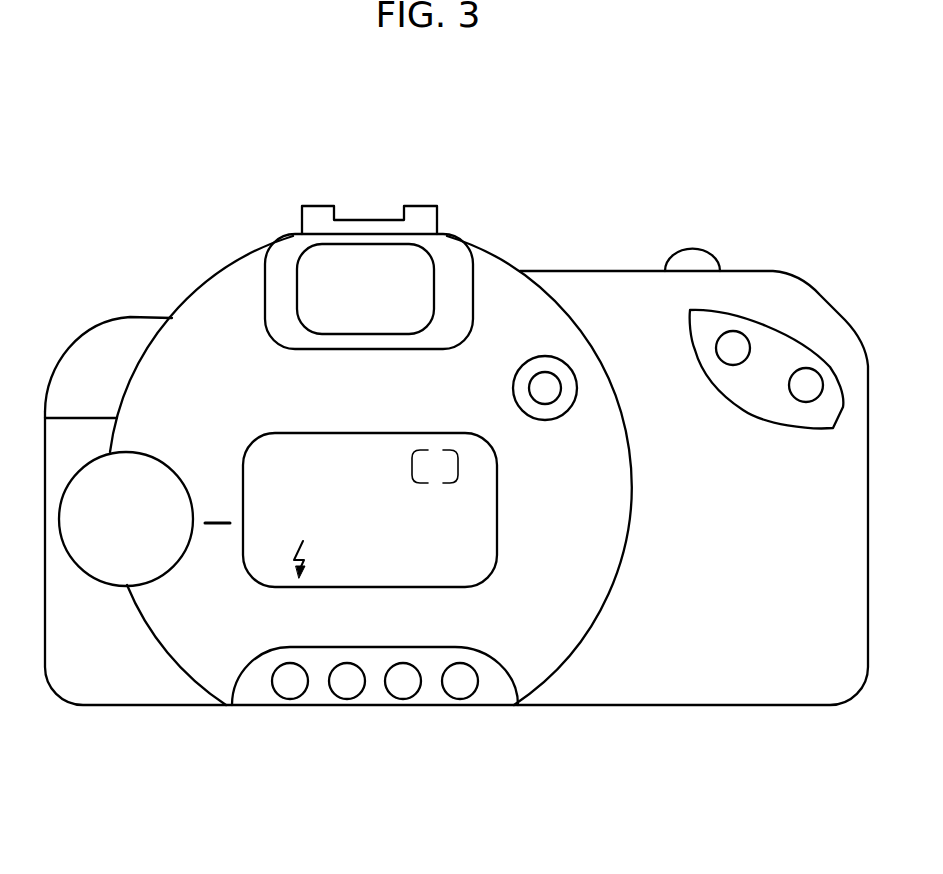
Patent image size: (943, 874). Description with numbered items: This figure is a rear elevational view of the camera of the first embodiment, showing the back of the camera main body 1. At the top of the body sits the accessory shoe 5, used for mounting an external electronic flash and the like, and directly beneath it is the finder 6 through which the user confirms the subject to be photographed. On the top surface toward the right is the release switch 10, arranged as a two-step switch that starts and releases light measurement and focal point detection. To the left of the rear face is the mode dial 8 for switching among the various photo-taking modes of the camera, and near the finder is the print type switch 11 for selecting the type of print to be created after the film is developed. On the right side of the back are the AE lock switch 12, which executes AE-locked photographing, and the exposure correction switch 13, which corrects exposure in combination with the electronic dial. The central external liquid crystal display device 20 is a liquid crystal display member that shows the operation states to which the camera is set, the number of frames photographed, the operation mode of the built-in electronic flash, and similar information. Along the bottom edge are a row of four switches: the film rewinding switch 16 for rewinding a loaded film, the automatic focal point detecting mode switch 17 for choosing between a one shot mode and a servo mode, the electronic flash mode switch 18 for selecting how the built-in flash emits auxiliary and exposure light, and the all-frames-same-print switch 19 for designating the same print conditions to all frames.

The camera main body 1 is at (788, 266).
The accessory shoe 5 is at (418, 210).
The finder 6 is at (420, 265).
The mode dial 8 is at (78, 550).
The release switch 10 is at (700, 250).
The print type switch 11 is at (559, 387).
The AE lock switch 12 is at (732, 360).
The exposure correction switch 13 is at (802, 393).
The film rewinding switch 16 is at (289, 690).
The automatic focal point detecting mode switch 17 is at (347, 690).
The electronic flash mode switch 18 is at (403, 690).
The all-frames-same-print switch 19 is at (461, 690).
The external liquid crystal display device 20 is at (497, 511).